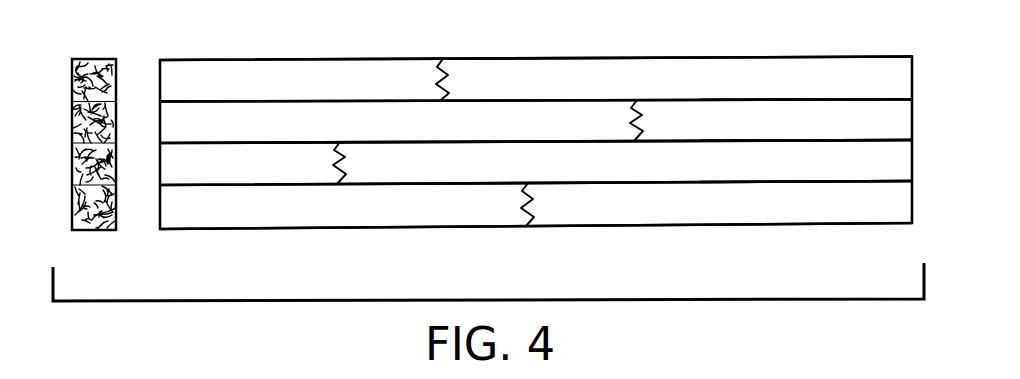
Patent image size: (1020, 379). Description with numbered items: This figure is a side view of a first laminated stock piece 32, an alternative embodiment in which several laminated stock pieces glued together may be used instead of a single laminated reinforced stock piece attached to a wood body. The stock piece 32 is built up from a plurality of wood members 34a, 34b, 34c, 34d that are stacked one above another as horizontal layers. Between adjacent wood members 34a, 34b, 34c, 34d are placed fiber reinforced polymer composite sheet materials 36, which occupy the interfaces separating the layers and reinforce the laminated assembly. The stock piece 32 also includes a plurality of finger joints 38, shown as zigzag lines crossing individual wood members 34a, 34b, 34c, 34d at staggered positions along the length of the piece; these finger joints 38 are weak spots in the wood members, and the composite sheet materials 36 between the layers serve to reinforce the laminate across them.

The first laminated stock piece 32 is at (666, 53).
The wood member 34a is at (226, 94).
The wood member 34b is at (226, 133).
The wood member 34c is at (226, 175).
The wood member 34d is at (226, 215).
The fiber reinforced polymer composite sheet material 36 is at (765, 175).
The finger joint 38 is at (449, 93).